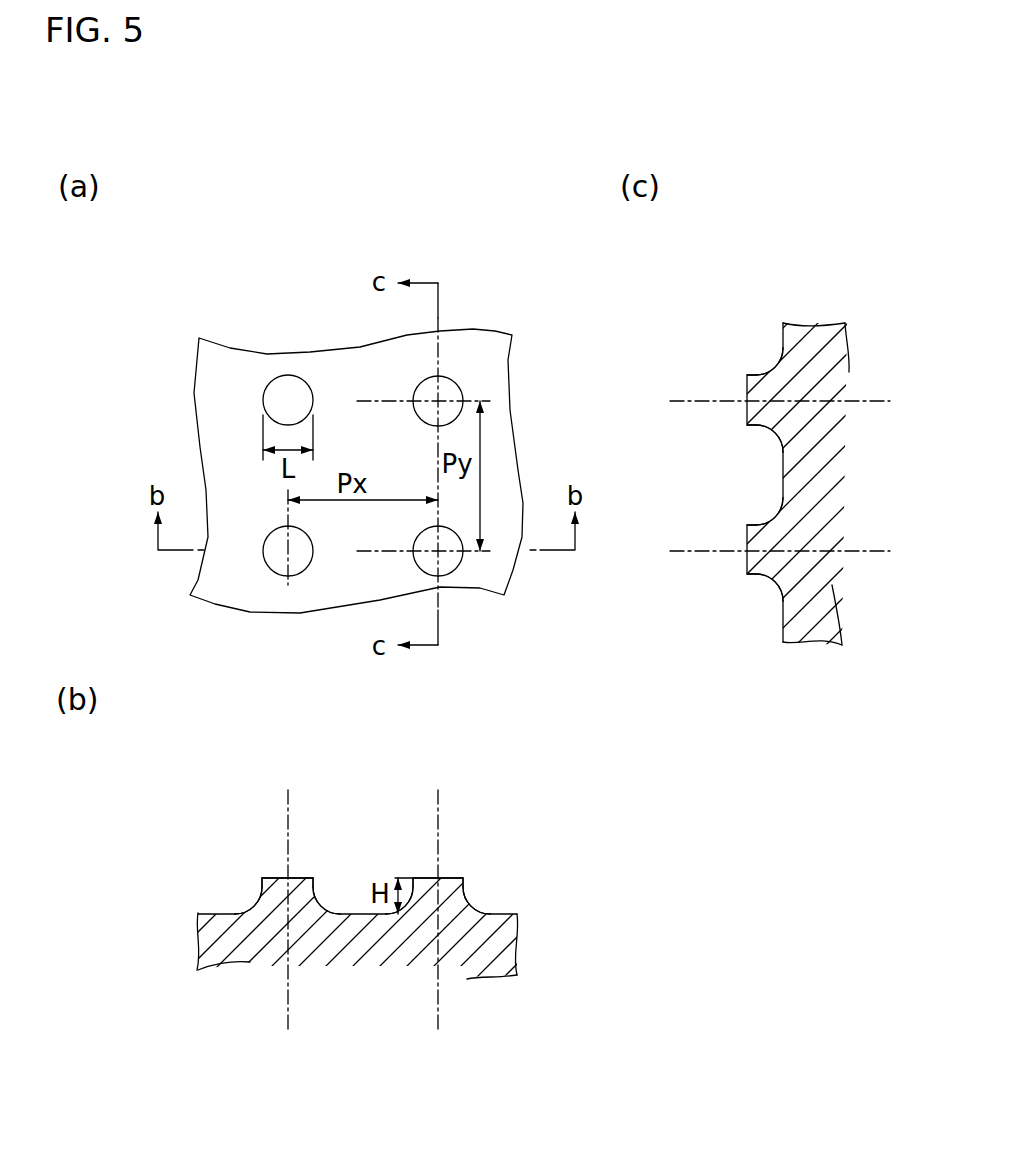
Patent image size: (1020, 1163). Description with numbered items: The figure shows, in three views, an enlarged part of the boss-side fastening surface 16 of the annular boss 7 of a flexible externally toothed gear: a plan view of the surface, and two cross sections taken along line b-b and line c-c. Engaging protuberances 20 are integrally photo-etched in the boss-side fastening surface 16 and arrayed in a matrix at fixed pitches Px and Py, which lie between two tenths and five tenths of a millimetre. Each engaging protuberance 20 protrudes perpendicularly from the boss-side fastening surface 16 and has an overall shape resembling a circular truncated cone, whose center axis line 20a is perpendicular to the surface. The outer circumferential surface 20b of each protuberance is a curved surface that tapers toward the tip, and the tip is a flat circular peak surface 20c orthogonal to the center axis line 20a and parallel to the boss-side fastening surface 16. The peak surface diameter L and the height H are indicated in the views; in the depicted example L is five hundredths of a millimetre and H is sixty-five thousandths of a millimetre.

The annular boss 7 is at (188, 358).
The boss-side fastening surface 16 is at (242, 403).
The engaging protuberances 20 is at (287, 388).
The center axis lines 20a is at (287, 835).
The outer circumferential surfaces 20b is at (257, 900).
The peak surfaces 20c is at (310, 877).